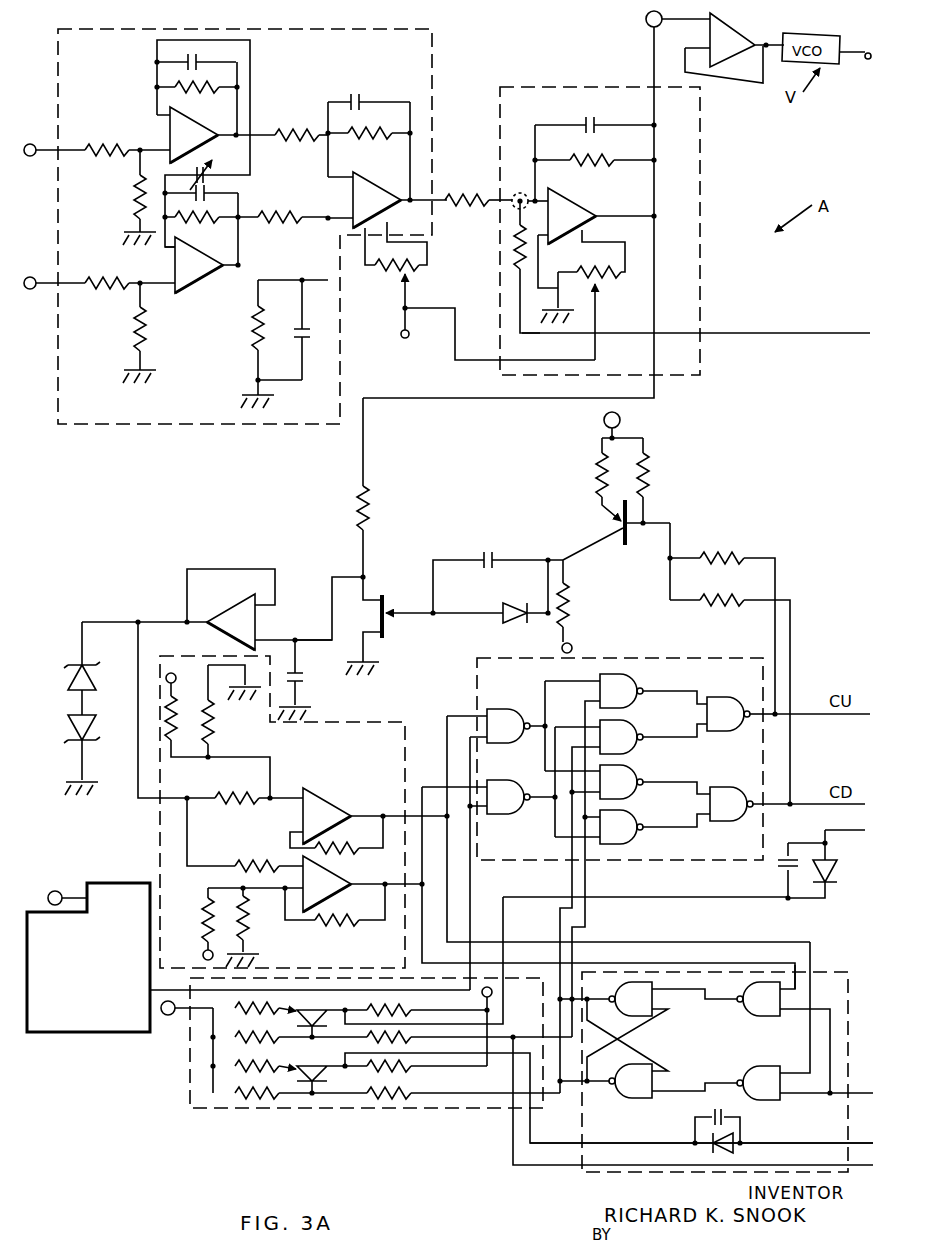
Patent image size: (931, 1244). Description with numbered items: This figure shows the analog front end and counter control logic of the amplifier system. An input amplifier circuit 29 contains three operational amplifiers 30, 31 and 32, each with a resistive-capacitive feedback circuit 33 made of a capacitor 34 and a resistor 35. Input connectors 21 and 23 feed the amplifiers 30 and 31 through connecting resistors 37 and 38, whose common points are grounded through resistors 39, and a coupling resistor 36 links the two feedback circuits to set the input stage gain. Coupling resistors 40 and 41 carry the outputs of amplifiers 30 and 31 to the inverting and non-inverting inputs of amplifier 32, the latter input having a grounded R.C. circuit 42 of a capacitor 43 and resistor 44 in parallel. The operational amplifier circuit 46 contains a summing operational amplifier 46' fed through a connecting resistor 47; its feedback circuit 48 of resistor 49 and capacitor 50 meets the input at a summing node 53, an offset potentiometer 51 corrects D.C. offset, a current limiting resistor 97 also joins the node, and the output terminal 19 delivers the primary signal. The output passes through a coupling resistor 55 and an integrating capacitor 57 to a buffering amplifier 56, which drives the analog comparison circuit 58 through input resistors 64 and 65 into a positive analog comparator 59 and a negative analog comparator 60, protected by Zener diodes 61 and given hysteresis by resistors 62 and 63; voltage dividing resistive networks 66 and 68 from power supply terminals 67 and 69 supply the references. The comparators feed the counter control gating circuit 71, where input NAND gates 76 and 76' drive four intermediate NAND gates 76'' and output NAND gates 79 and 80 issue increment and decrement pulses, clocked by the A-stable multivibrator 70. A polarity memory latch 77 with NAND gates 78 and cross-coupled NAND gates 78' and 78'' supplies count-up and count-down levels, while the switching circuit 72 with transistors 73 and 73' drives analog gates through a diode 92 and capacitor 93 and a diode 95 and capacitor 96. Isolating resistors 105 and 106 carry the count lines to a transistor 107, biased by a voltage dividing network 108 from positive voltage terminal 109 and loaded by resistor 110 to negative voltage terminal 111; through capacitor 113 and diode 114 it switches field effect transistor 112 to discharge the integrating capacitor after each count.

The output terminal 19 is at (646, 19).
The input connector 21 is at (38, 133).
The input connector 23 is at (38, 258).
The input amplifier circuit 29 is at (72, 432).
The operational amplifier 30 is at (168, 132).
The operational amplifier 31 is at (193, 285).
The operational amplifier 32 is at (372, 174).
The resistive-capacitive feedback circuit 33 is at (241, 111).
The capacitor 34 is at (194, 58).
The resistor 35 is at (216, 88).
The coupling resistor 36 is at (206, 178).
The connecting resistor 37 is at (103, 143).
The connecting resistor 38 is at (106, 292).
The resistor 39 is at (135, 196).
The coupling resistor 40 is at (290, 140).
The coupling resistor 41 is at (292, 226).
The grounded R.C. circuit 42 is at (296, 388).
The capacitor 43 is at (305, 336).
The resistor 44 is at (254, 333).
The operational amplifier circuit 46 is at (600, 202).
The operational amplifier 46' is at (597, 234).
The connecting resistor 47 is at (470, 196).
The resistive-capacitive feedback circuit 48 is at (533, 138).
The resistor 49 is at (596, 160).
The capacitor 50 is at (598, 125).
The offset potentiometer 51 is at (606, 291).
The summing node 53 is at (514, 209).
The coupling resistor 55 is at (372, 514).
The buffering amplifier 56 is at (262, 611).
The integrating capacitor 57 is at (303, 679).
The analog comparison circuit 58 is at (378, 722).
The positive analog comparator 59 is at (332, 802).
The negative analog comparator 60 is at (340, 883).
The Zener diode 61 is at (90, 674).
The resistor 62 is at (341, 847).
The resistor 63 is at (350, 919).
The input resistor 64 is at (238, 806).
The input resistor 65 is at (247, 861).
The voltage dividing resistive network 66 is at (186, 768).
The positive 12-volt power supply terminal 67 is at (188, 655).
The voltage dividing resistive network 68 is at (198, 896).
The minus 12-volt power supply terminal 69 is at (204, 950).
The A-stable multivibrator 70 is at (90, 1034).
The counter control gating circuit 71 is at (712, 656).
The switching circuit 72 is at (209, 1116).
The transistor 73 is at (366, 1043).
The transistor 73' is at (554, 1076).
The input NAND gate 76 is at (497, 714).
The input NAND gate 76' is at (490, 786).
The intermediate NAND gate 76'' is at (627, 878).
The polarity memory latch 77 is at (568, 1173).
The NAND gate 78 is at (762, 1021).
The cross-coupled NAND gate 78' is at (634, 1031).
The cross-coupled NAND gate 78'' is at (637, 1076).
The output NAND gate 79 is at (728, 703).
The output NAND gate 80 is at (738, 788).
The diode 92 is at (832, 886).
The capacitor 93 is at (783, 870).
The diode 95 is at (736, 1149).
The capacitor 96 is at (730, 1115).
The current limiting resistor 97 is at (510, 258).
The isolating resistor 105 is at (746, 553).
The isolating resistor 106 is at (737, 595).
The transistor 107 is at (626, 548).
The voltage dividing network 108 is at (667, 458).
The positive voltage terminal 109 is at (621, 423).
The resistor 110 is at (572, 612).
The negative voltage terminal 111 is at (573, 646).
The field effect transistor 112 is at (383, 590).
The capacitor 113 is at (494, 556).
The diode 114 is at (527, 588).